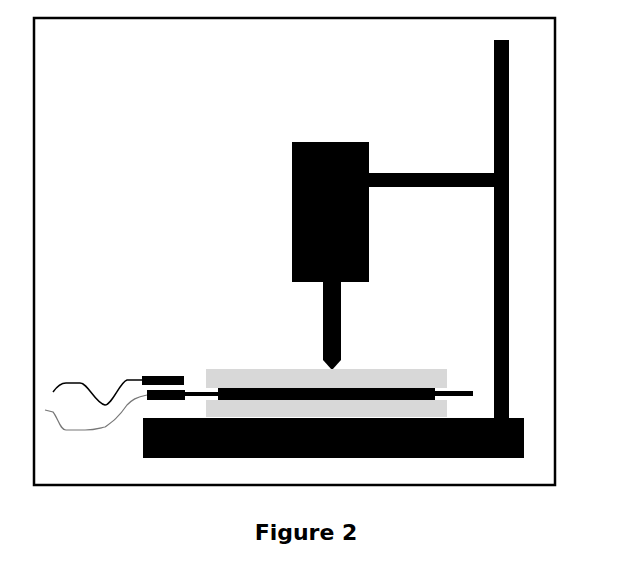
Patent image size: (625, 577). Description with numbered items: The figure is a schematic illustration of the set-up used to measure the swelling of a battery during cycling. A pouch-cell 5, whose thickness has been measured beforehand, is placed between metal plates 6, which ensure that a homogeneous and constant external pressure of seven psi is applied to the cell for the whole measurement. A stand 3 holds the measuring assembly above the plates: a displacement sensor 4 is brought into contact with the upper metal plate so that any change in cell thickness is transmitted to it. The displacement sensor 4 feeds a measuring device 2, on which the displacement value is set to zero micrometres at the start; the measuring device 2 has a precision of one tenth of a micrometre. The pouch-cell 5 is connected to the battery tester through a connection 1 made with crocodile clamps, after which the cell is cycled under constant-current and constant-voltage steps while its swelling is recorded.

The connection from the pouch-cell to the battery tester 1 is at (167, 356).
The measuring device 2 is at (337, 136).
The stand 3 is at (513, 268).
The displacement sensor 4 is at (344, 343).
The pouch-cell 5 is at (271, 394).
The metal plates 6 is at (452, 377).